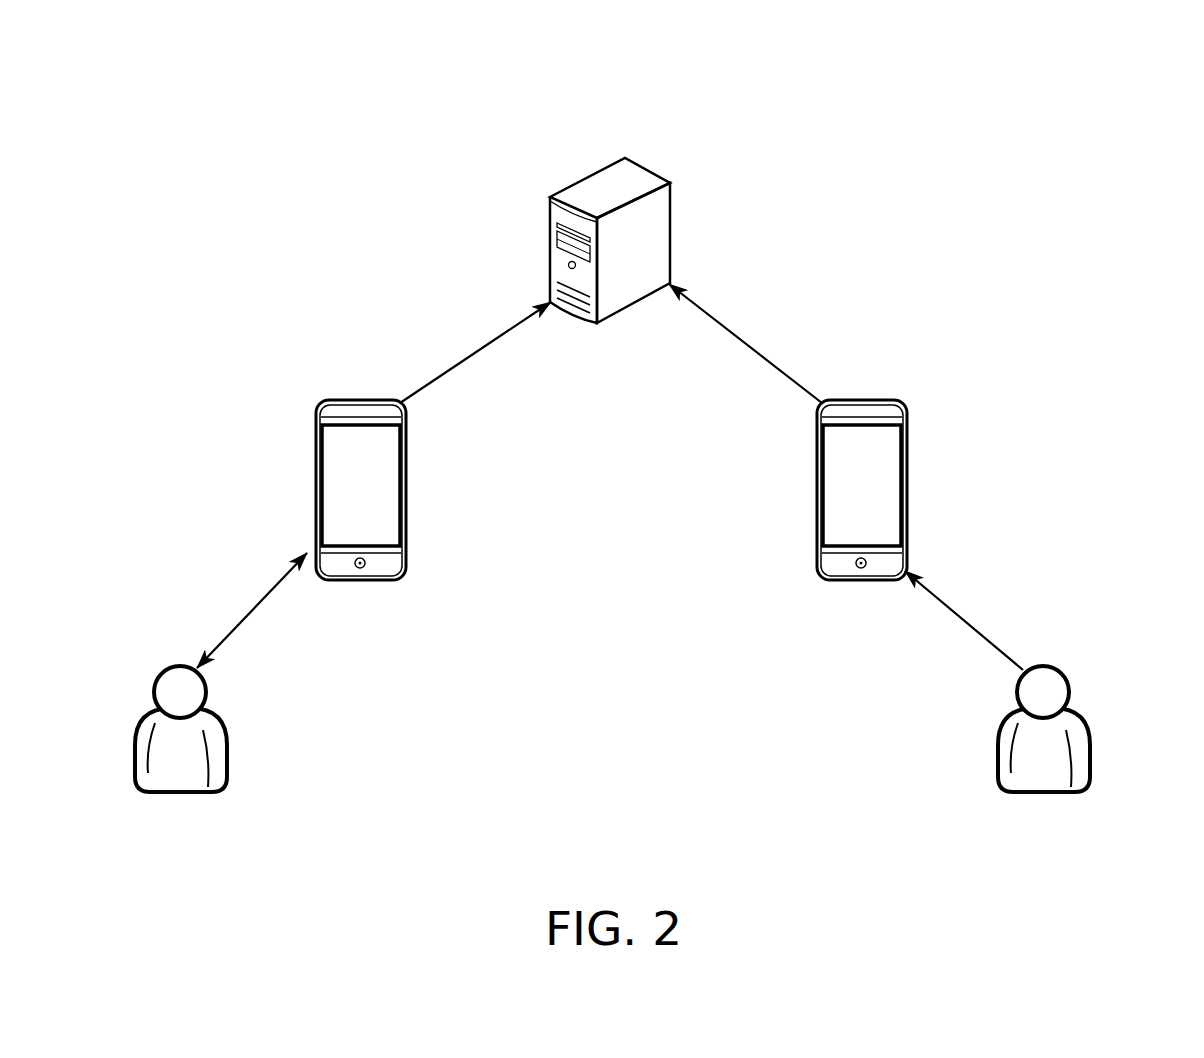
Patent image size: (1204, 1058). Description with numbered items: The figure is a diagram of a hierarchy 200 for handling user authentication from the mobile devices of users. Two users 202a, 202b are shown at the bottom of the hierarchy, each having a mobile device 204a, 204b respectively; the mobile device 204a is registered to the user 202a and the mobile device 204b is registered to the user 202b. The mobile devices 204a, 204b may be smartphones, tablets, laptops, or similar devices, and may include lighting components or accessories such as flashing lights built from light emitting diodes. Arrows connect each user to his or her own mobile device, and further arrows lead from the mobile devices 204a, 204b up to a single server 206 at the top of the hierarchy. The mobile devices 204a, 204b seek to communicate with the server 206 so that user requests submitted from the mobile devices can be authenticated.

The system environment 200 is at (1144, 100).
The user 202a is at (212, 700).
The user 202b is at (1070, 678).
The mobile device 204a is at (409, 452).
The mobile device 204b is at (910, 443).
The server 206 is at (667, 178).